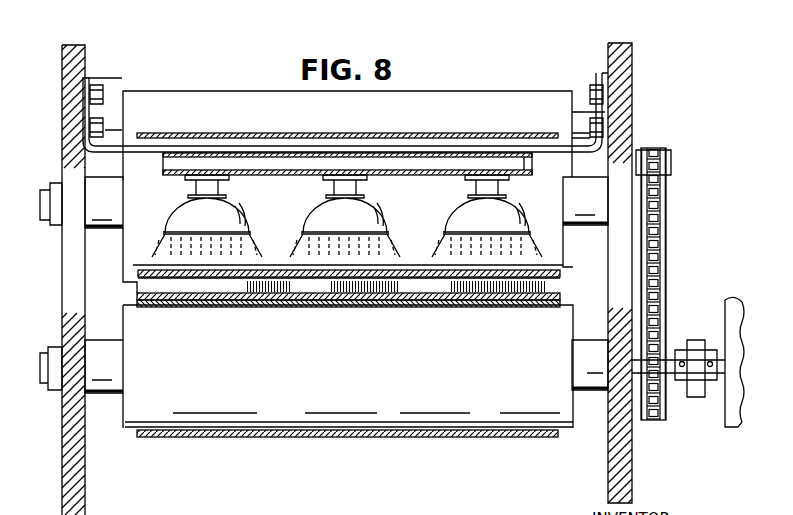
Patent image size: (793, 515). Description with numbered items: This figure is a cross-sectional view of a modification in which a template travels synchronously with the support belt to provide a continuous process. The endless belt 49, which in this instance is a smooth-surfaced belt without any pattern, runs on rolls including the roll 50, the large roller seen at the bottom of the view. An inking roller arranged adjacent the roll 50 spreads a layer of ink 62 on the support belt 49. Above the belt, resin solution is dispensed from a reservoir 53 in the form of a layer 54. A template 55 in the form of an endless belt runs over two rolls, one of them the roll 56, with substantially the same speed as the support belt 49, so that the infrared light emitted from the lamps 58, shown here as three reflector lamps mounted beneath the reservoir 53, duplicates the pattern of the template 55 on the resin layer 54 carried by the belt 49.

The endless belt 49 is at (137, 305).
The roll 50 is at (290, 413).
The reservoir 53 is at (486, 100).
The layer 54 is at (557, 300).
The template 55 is at (229, 133).
The roll 56 is at (413, 141).
The lamps 58 is at (228, 218).
The layer of ink 62 is at (137, 299).